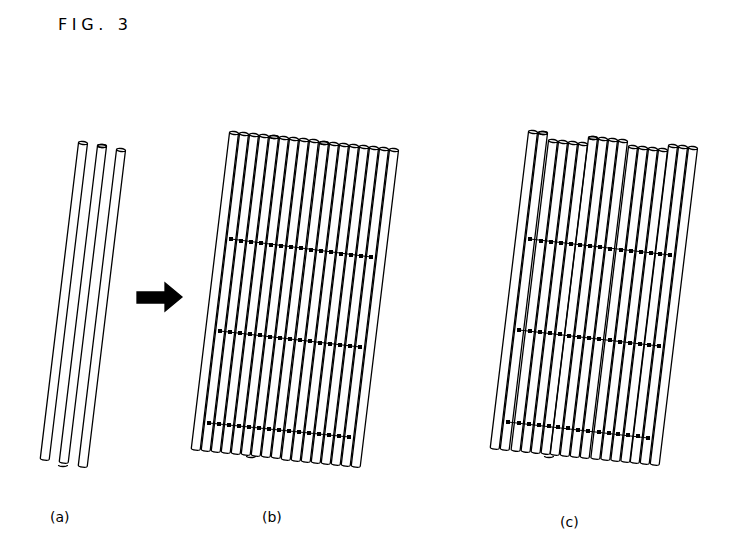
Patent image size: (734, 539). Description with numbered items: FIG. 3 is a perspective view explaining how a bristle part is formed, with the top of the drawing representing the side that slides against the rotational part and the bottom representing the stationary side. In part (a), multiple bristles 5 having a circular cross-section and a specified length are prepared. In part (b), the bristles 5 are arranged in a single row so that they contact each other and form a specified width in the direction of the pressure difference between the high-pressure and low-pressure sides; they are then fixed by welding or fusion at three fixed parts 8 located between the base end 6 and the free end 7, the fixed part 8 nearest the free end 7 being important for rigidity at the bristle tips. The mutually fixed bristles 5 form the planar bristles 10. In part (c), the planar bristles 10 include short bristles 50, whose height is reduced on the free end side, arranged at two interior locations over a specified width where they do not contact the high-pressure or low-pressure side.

The bristles 5 is at (77, 169).
The base end 6 is at (63, 470).
The free end 7 is at (101, 148).
The fixed parts 8 is at (231, 239).
The planar bristles 10 is at (331, 133).
The short bristles 50 is at (567, 142).